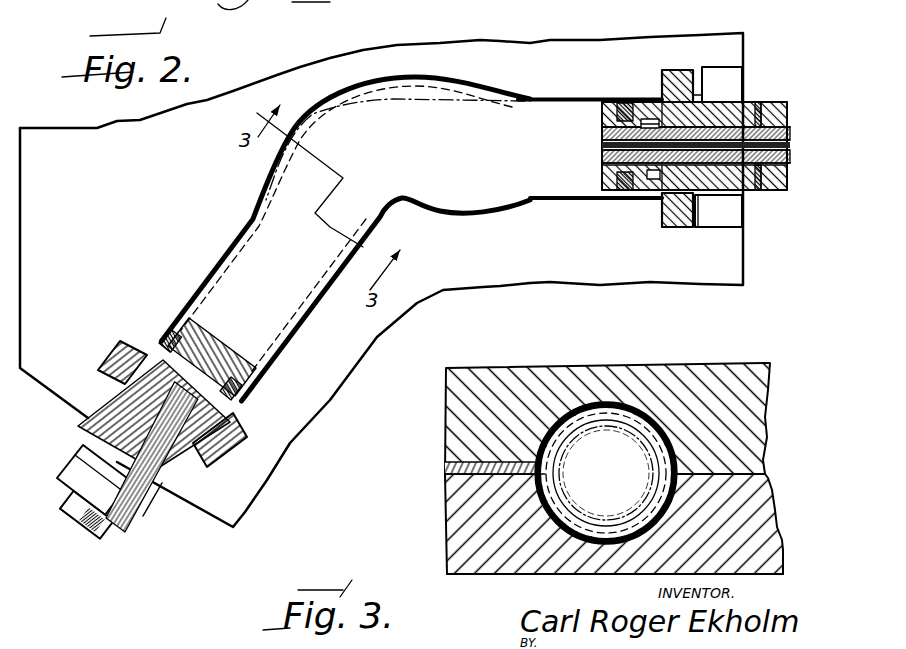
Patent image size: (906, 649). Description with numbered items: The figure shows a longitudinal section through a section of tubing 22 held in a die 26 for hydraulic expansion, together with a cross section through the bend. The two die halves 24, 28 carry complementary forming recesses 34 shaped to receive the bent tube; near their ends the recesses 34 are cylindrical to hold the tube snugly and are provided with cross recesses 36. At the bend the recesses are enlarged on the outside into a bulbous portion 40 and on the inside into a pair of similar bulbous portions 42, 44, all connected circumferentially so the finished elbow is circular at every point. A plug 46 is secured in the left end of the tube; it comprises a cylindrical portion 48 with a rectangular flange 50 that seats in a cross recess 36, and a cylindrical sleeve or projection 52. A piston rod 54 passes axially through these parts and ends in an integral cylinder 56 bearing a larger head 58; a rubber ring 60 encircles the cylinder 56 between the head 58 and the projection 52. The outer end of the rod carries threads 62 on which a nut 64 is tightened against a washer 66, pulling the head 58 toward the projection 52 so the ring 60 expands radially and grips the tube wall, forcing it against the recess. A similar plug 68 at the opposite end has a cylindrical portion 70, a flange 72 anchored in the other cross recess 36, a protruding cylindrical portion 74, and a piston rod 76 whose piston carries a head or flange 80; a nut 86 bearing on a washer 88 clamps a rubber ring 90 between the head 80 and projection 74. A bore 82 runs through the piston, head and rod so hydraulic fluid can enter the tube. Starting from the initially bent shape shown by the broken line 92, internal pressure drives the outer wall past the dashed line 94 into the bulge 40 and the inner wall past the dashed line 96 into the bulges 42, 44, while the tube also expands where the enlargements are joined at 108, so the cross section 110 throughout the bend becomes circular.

In FIG. 2, the section of tubing 22 is at (543, 97).
In FIG. 3, the die half 24 is at (447, 562).
In FIG. 2, the die 26 is at (427, 304).
In FIG. 3, the die 26 is at (440, 483).
In FIG. 3, the die half 28 is at (446, 432).
In FIG. 2, the forming recesses 34 is at (221, 252).
In FIG. 3, the forming recesses 34 is at (575, 397).
In FIG. 2, the cross recesses 36 is at (701, 64).
In FIG. 2, the bulbous portion 40 is at (340, 94).
In FIG. 3, the bulbous portion 40 is at (446, 462).
In FIG. 2, the bulbous portion 42 is at (352, 286).
In FIG. 3, the bulbous portion 42 is at (662, 423).
In FIG. 2, the bulbous portion 44 is at (495, 220).
In FIG. 2, the plug 46 is at (162, 414).
In FIG. 2, the cylindrical portion 48 is at (157, 477).
In FIG. 2, the rectangular flange 50 is at (235, 431).
In FIG. 2, the cylindrical sleeve or projection 52 is at (247, 407).
In FIG. 2, the piston rod 54 is at (123, 413).
In FIG. 2, the cylinder (piston) 56 is at (200, 341).
In FIG. 2, the head 58 is at (202, 293).
In FIG. 2, the rubber ring or gasket 60 is at (165, 325).
In FIG. 2, the threads 62 is at (77, 527).
In FIG. 2, the nut 64 is at (70, 483).
In FIG. 2, the washer 66 is at (152, 498).
In FIG. 2, the plug 68 is at (442, 183).
In FIG. 2, the cylindrical portion 70 is at (723, 180).
In FIG. 2, the flange 72 is at (683, 213).
In FIG. 2, the protruding cylindrical portion 74 is at (652, 192).
In FIG. 2, the piston rod 76 is at (707, 133).
In FIG. 2, the head or flange 80 is at (609, 99).
In FIG. 2, the bore 82 is at (602, 146).
In FIG. 2, the nut 86 is at (784, 198).
In FIG. 2, the washer 88 is at (757, 192).
In FIG. 2, the rubber ring or gasket 90 is at (622, 193).
In FIG. 2, the broken line (initial bent tube position) 92 is at (421, 101).
In FIG. 3, the broken line (initial bent tube position) 92 is at (590, 430).
In FIG. 2, the dashed line position (outside of bend) 94 is at (394, 77).
In FIG. 3, the dashed line position (outside of bend) 94 is at (587, 530).
In FIG. 2, the dashed line position (inside of bend) 96 is at (494, 206).
In FIG. 3, the dashed line position (inside of bend) 96 is at (660, 472).
In FIG. 3, the junction of enlargements 108 is at (598, 405).
In FIG. 3, the cross section of tubing 110 is at (550, 527).